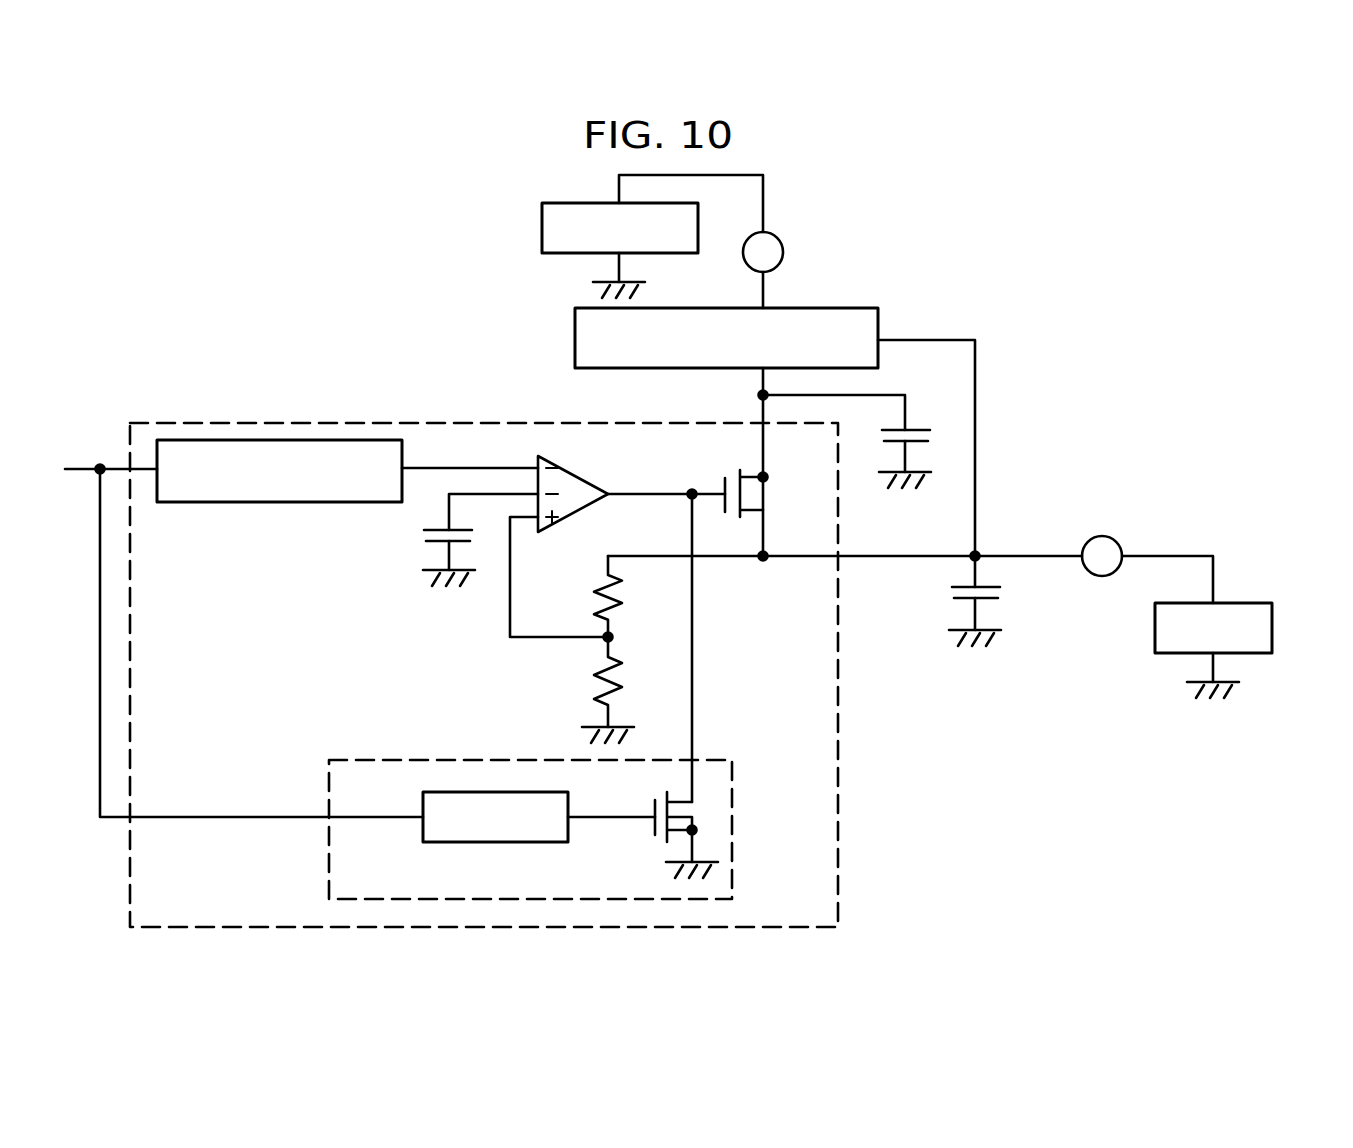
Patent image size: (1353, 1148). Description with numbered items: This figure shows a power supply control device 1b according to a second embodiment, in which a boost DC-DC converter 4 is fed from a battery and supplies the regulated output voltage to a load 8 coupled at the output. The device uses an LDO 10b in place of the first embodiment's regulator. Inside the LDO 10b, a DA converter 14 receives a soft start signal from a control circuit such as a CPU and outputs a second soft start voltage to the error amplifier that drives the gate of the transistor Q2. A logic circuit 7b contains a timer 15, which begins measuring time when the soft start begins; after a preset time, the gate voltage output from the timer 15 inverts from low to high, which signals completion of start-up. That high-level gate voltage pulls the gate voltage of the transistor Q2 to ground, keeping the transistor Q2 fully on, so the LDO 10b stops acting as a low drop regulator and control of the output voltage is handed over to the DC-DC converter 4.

The power supply control device 1b is at (1072, 270).
The boost DC-DC converter 4 is at (574, 333).
The load 8 is at (1272, 612).
The LDO 10b is at (838, 762).
The DA converter 14 is at (297, 502).
The timer 15 is at (522, 842).
The logic circuit 7b is at (733, 843).
The transistor Q2 is at (743, 477).